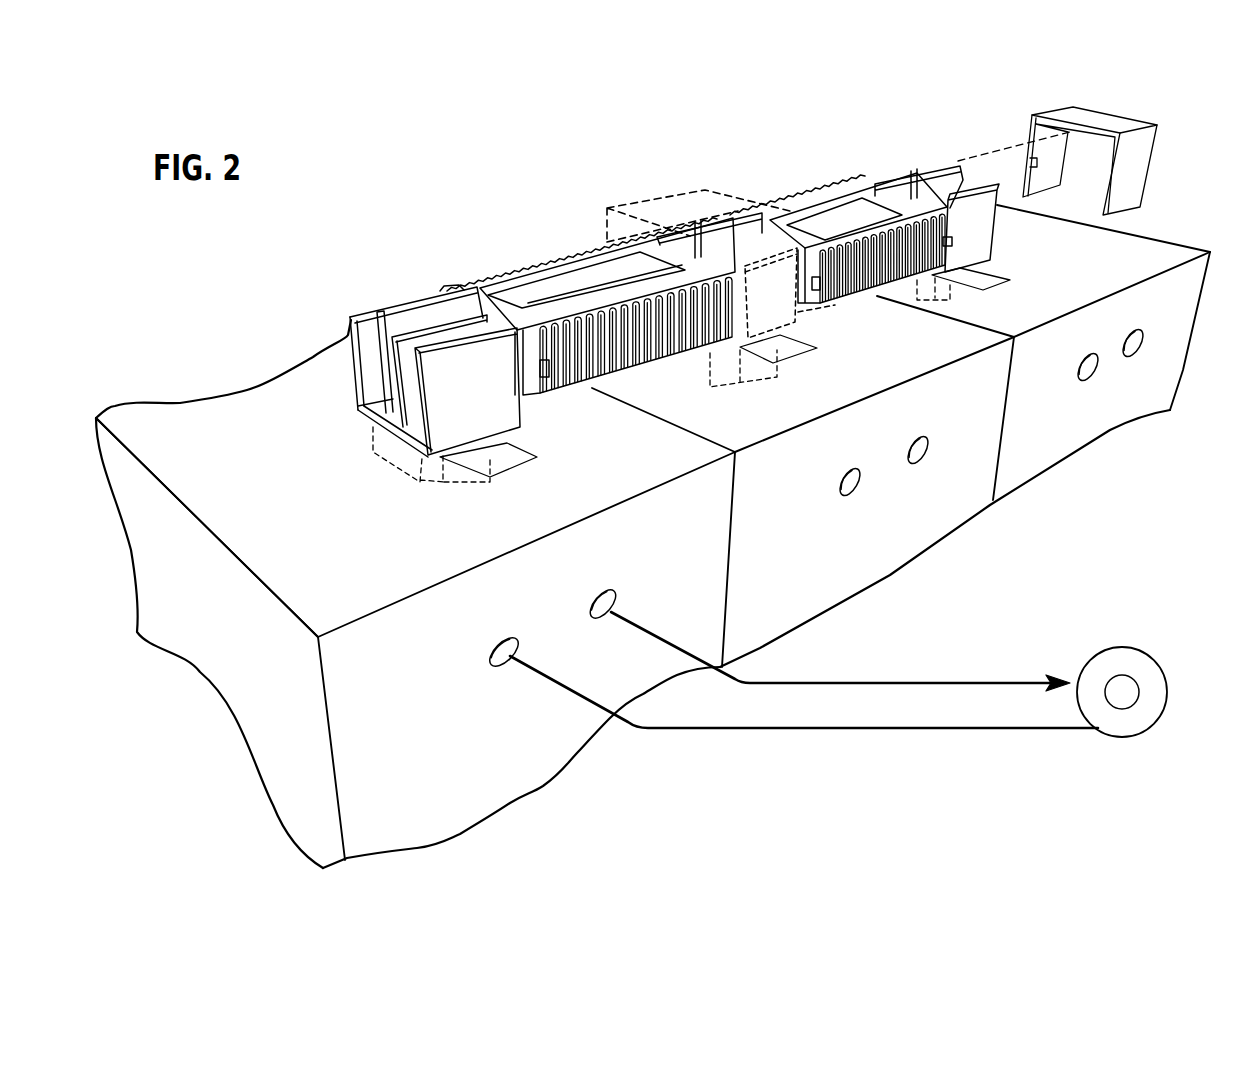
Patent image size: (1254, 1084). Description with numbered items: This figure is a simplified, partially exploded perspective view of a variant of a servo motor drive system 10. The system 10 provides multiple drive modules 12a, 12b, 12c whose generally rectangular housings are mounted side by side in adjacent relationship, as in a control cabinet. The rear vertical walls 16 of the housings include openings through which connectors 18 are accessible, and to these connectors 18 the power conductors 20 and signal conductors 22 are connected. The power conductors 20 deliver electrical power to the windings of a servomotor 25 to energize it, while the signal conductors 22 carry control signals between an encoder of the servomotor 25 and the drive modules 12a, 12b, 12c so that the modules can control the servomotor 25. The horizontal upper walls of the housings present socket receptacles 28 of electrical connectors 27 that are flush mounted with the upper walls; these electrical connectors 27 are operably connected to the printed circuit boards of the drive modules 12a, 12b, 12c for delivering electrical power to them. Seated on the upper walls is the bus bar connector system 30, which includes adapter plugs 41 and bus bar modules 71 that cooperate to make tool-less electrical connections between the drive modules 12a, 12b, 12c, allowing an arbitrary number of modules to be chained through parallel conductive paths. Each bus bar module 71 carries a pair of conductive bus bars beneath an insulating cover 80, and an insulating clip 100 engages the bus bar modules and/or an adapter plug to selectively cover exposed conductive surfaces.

The servo motor drive system 10 is at (281, 273).
The drive module 12a is at (247, 417).
The drive module 12b is at (963, 493).
The drive module 12c is at (1155, 395).
The rear vertical wall 16 is at (1053, 370).
The connector 18 is at (834, 493).
The power conductor 20 is at (970, 682).
The signal conductor 22 is at (948, 733).
The servomotor 25 is at (1140, 665).
The electrical connector 27 is at (367, 462).
The socket receptacle 28 is at (508, 443).
The bus bar connector system 30 is at (445, 280).
The adapter plug 41 is at (349, 377).
The bus bar module 71 is at (642, 372).
The cover 80 is at (500, 284).
The clip 100 is at (705, 190).